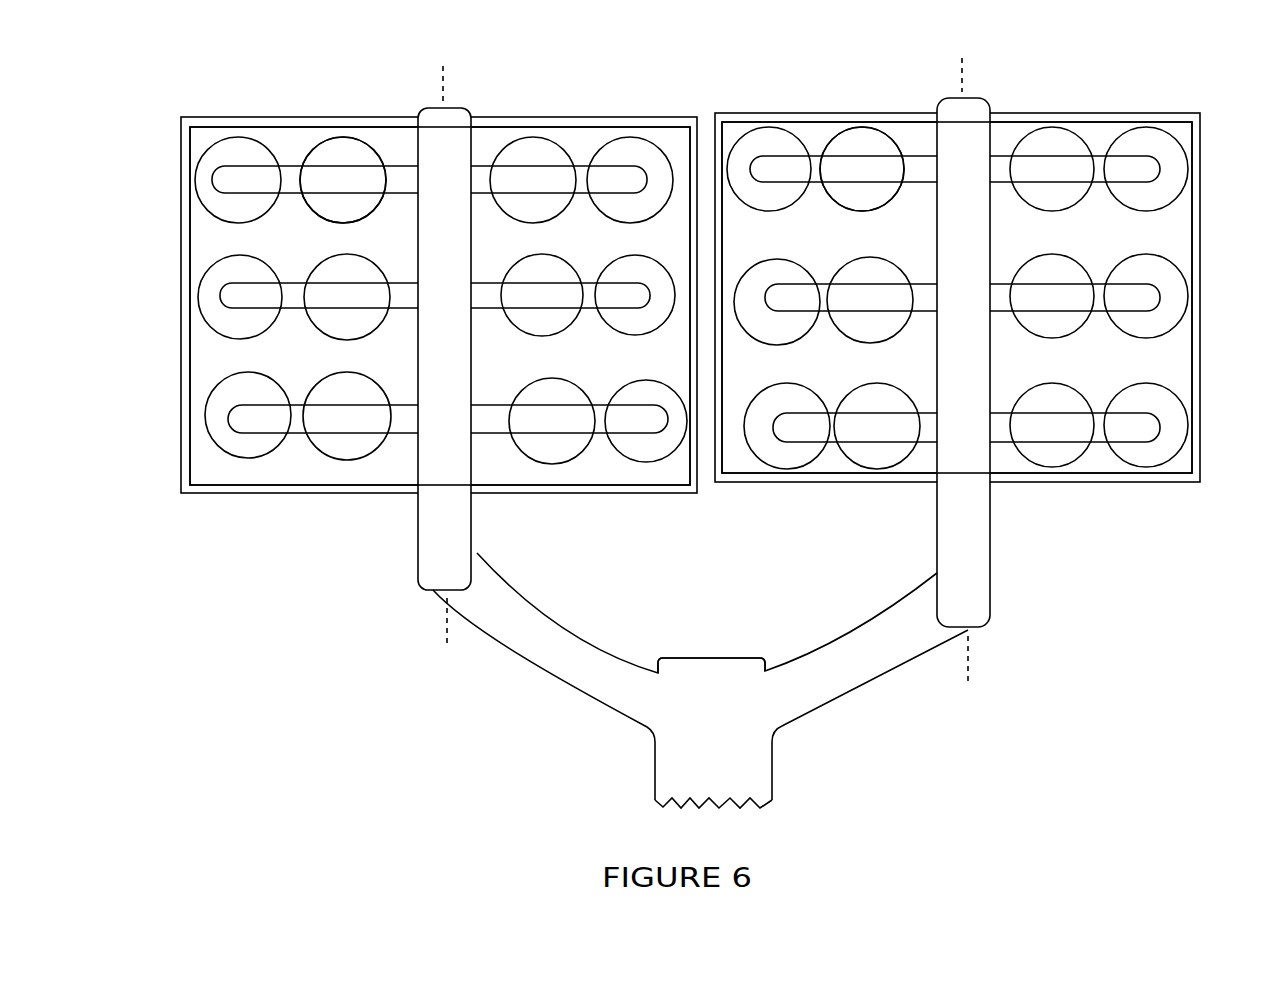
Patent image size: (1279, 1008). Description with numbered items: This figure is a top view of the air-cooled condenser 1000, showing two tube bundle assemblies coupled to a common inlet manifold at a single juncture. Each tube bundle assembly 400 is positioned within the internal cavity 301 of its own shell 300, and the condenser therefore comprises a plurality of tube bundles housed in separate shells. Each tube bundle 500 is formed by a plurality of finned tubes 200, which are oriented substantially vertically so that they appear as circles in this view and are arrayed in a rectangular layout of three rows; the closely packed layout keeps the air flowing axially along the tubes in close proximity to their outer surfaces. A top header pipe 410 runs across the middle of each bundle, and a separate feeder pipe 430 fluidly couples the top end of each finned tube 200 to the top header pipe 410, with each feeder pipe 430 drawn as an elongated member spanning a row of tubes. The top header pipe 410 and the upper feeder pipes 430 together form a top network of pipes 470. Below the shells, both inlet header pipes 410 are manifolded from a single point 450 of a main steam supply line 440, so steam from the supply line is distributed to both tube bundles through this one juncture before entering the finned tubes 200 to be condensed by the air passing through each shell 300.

The air-cooled condenser 1000 is at (168, 477).
The finned tube 200 is at (667, 401).
The shell 300 is at (579, 117).
The internal cavity 301 is at (585, 472).
The tube bundle assembly 400 is at (322, 467).
The top header pipe 410 is at (982, 246).
The feeder pipe 430 is at (1079, 436).
The main steam supply line 440 is at (773, 775).
The single point 450 is at (712, 706).
The top network of pipes 470 is at (397, 434).
The tube bundle 500 is at (379, 146).